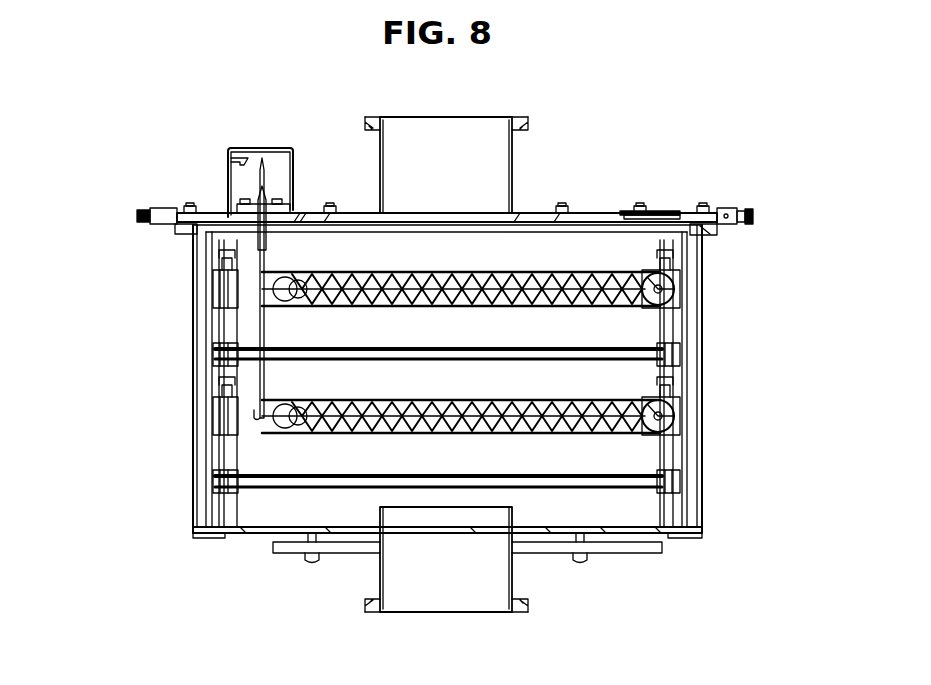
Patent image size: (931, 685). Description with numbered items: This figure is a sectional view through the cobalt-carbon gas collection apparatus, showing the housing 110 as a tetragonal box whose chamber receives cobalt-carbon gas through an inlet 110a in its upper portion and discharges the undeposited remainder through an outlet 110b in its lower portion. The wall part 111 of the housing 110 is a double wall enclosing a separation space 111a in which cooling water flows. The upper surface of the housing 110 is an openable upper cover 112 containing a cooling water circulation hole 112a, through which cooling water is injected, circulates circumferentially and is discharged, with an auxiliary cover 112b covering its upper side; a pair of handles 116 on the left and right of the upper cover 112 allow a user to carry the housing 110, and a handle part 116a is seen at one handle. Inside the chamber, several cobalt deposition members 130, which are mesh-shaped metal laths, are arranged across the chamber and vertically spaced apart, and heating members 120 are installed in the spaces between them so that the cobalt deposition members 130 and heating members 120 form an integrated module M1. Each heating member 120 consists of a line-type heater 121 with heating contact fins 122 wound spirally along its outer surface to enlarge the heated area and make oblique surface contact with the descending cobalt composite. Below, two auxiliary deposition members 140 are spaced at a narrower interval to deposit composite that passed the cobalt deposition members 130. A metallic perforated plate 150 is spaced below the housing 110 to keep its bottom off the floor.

The housing 110 is at (489, 381).
The inlet 110a is at (397, 126).
The outlet 110b is at (447, 608).
The wall part 111 is at (690, 455).
The separation space 111a is at (692, 517).
The upper cover 112 is at (578, 213).
The cooling water circulation hole 112a is at (652, 211).
The auxiliary cover 112b is at (705, 208).
The handle 116 is at (225, 257).
The bracket tab 116a is at (230, 161).
The heating member 120 is at (373, 352).
The line-type heater 121 is at (282, 318).
The heating contact fins 122 is at (262, 304).
The cobalt deposition member 130 is at (383, 309).
The auxiliary deposition member 140 is at (541, 347).
The metallic perforated plate 150 is at (620, 556).
The module M1 is at (366, 268).